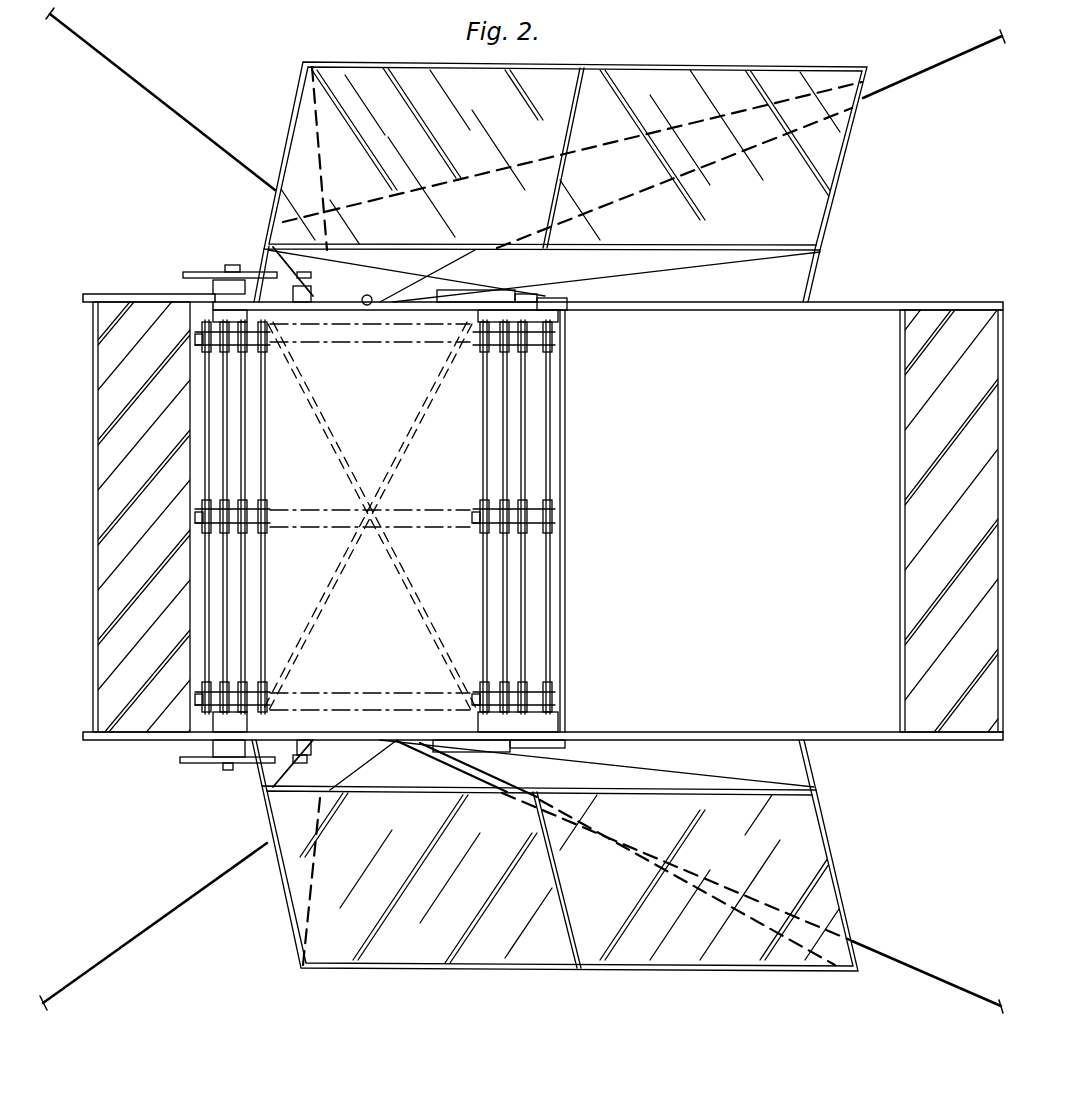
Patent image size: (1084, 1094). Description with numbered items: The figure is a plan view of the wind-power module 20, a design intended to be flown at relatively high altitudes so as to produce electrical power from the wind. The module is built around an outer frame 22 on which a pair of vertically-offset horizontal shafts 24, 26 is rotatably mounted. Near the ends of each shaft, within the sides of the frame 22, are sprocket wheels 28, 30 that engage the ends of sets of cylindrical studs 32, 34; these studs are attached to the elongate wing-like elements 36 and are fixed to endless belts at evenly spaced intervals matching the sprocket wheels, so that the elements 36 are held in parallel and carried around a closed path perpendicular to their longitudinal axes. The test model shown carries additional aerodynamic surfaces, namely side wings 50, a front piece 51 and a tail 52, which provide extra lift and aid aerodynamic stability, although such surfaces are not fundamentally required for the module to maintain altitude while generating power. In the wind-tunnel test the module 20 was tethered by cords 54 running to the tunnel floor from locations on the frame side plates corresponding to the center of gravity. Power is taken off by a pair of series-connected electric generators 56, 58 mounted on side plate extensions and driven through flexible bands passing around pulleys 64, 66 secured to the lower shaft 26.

The wind-power module 20 is at (898, 226).
The outer frame 22 is at (316, 325).
The horizontal shaft 24 is at (507, 320).
The lower shaft 26 is at (231, 265).
The sprocket wheel 28 is at (212, 352).
The sprocket wheel 30 is at (197, 704).
The cylindrical stud 32 is at (205, 378).
The cylindrical stud 34 is at (205, 688).
The wing-like elements 36 is at (247, 423).
The side wings 50 is at (722, 88).
The front piece 51 is at (107, 617).
The tail 52 is at (917, 532).
The cords 54 is at (152, 90).
The electric generator 56 is at (300, 270).
The electric generator 58 is at (290, 762).
The pulley 64 is at (187, 272).
The pulley 66 is at (178, 757).